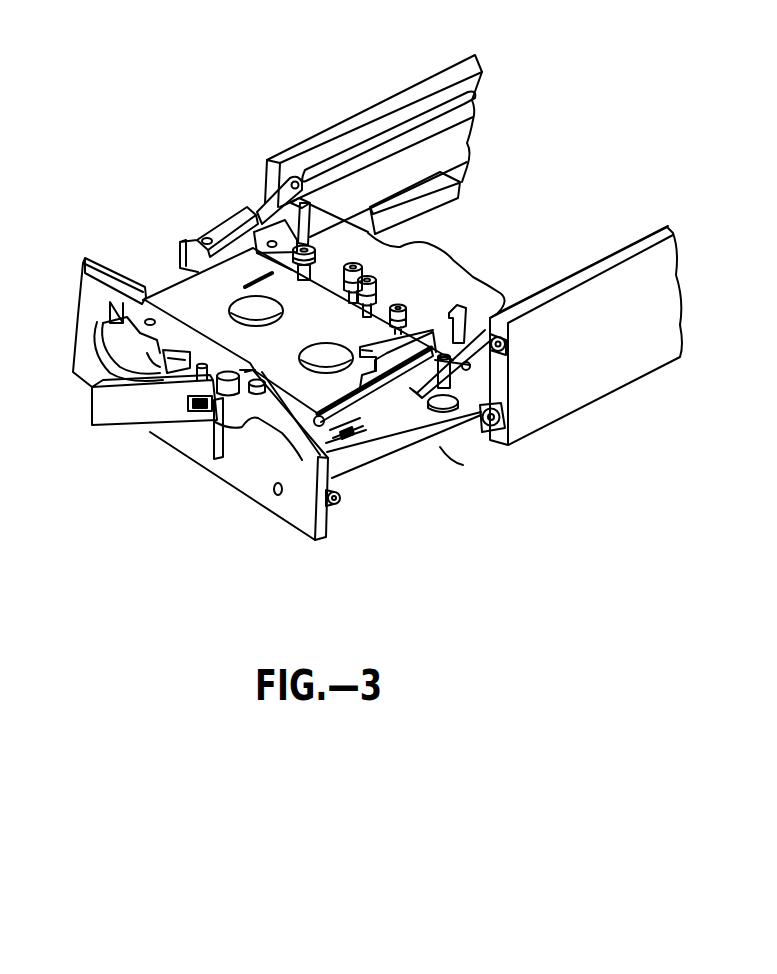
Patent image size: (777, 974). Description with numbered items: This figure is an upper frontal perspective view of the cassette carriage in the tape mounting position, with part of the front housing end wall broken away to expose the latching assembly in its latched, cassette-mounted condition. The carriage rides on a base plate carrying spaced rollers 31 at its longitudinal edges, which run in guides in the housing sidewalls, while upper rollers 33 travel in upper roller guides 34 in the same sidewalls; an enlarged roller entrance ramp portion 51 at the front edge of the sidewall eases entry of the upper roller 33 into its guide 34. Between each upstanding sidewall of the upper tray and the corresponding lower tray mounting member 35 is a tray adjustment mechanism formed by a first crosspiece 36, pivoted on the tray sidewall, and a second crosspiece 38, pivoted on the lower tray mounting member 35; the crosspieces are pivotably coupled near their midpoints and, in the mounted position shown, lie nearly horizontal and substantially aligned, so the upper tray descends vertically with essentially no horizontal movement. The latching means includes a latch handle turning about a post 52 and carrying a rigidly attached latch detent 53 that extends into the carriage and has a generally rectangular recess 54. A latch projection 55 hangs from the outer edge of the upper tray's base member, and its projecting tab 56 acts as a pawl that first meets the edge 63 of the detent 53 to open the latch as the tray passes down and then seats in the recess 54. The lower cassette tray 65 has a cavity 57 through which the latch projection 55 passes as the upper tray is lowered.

The rollers 31 is at (483, 432).
The upper rollers 33 is at (506, 350).
The upper roller guides 34 is at (385, 140).
The lower tray mounting member 35 is at (408, 432).
The first crosspiece 36 is at (415, 397).
The second crosspiece 38 is at (367, 405).
The roller entrance ramp portion 51 is at (266, 200).
The post 52 is at (259, 390).
The latch detent 53 is at (155, 357).
The rectangular recess 54 is at (196, 368).
The latch projection 55 is at (257, 396).
The projecting tab 56 is at (235, 397).
The cavity 57 is at (291, 400).
The edge of latch detent 63 is at (196, 368).
The lower cassette tray 65 is at (330, 503).